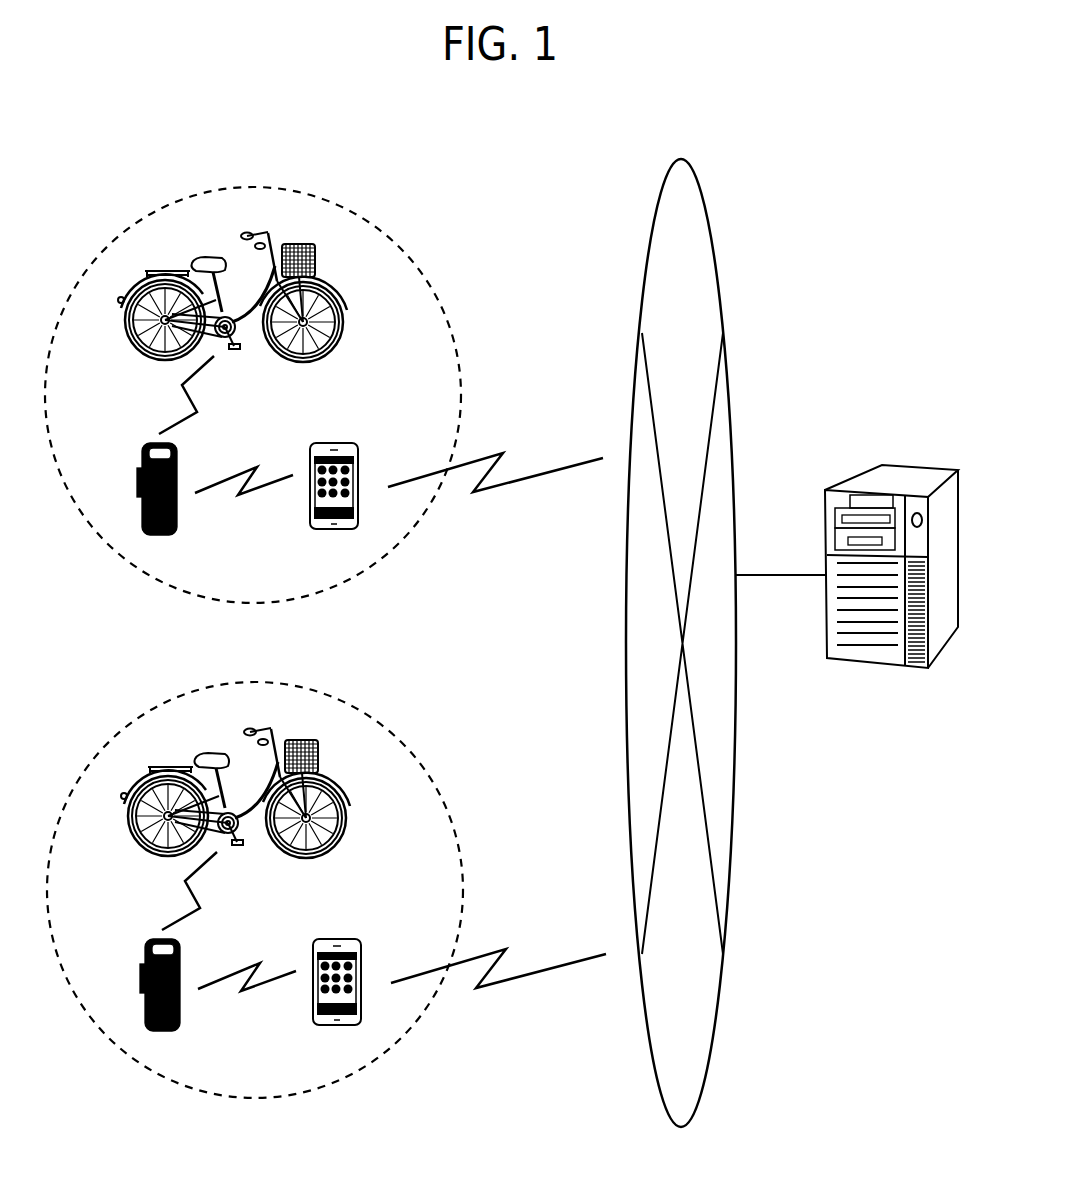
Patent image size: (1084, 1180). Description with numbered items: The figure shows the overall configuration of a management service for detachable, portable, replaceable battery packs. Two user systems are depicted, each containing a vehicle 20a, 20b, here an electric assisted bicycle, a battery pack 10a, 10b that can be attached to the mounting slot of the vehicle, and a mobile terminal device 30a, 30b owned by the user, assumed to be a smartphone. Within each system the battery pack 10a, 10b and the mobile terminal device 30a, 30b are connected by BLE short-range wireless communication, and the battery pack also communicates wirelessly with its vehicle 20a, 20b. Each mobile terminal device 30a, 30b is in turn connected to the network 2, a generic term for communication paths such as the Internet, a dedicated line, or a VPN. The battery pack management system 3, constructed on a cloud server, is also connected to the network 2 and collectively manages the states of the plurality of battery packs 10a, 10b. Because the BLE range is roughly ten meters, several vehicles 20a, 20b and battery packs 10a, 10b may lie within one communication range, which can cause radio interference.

The network 2 is at (711, 223).
The battery pack management system 3 is at (917, 466).
The battery pack 10a is at (179, 463).
The battery pack 10b is at (183, 973).
The vehicle 20a is at (325, 282).
The vehicle 20b is at (247, 793).
The mobile terminal device 30a is at (359, 474).
The mobile terminal device 30b is at (359, 976).